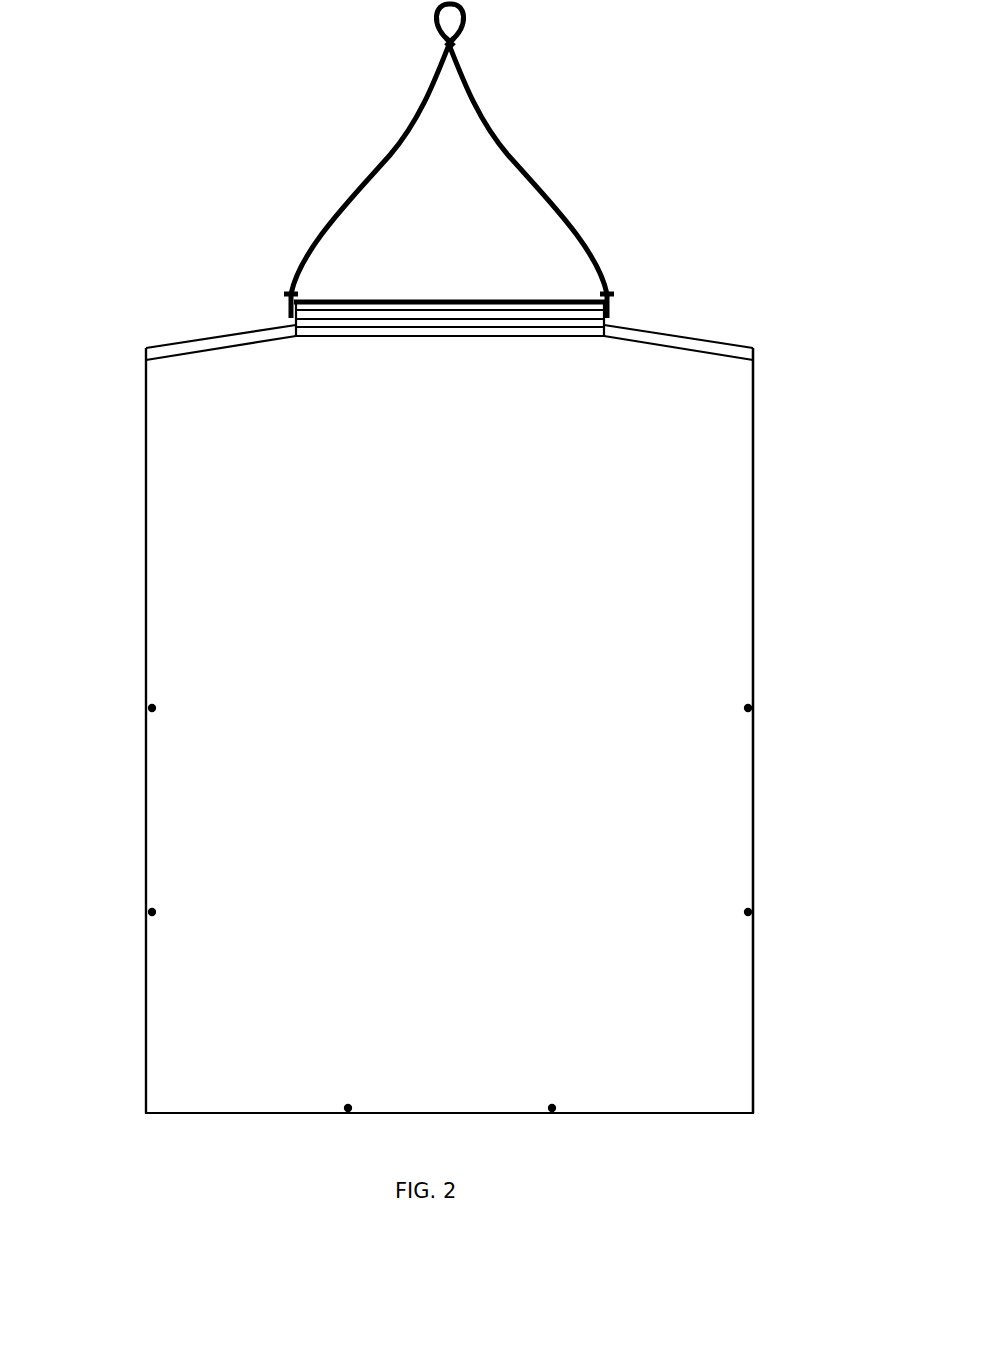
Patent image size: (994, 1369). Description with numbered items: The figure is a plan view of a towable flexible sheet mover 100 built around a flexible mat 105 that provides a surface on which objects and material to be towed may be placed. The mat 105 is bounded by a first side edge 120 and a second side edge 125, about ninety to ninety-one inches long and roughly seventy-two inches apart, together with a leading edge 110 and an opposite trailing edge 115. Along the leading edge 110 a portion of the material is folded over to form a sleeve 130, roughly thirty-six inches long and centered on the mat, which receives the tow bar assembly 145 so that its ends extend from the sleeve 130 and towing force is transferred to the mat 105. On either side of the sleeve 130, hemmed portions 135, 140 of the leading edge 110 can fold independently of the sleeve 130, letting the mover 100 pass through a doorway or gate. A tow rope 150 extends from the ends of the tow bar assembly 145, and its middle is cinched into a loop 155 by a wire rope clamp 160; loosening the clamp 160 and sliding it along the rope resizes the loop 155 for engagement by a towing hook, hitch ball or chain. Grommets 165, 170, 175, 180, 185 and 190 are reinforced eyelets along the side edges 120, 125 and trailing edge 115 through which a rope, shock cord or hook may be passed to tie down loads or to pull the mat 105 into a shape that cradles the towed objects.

The towable flexible sheet mover 100 is at (765, 468).
The mat 105 is at (190, 511).
The leading edge 110 is at (337, 335).
The trailing edge 115 is at (442, 1114).
The first side edge 120 is at (146, 808).
The second side edge 125 is at (755, 811).
The sleeve 130 is at (437, 300).
The hemmed portion 135 is at (221, 340).
The hemmed portion 140 is at (670, 340).
The tow bar assembly 145 is at (611, 300).
The tow rope 150 is at (370, 172).
The loop 155 is at (440, 15).
The wire rope clamp 160 is at (455, 44).
The grommet 165 is at (150, 912).
The grommet 170 is at (146, 712).
The grommet 175 is at (755, 716).
The grommet 180 is at (752, 914).
The grommet 185 is at (552, 1112).
The grommet 190 is at (348, 1112).